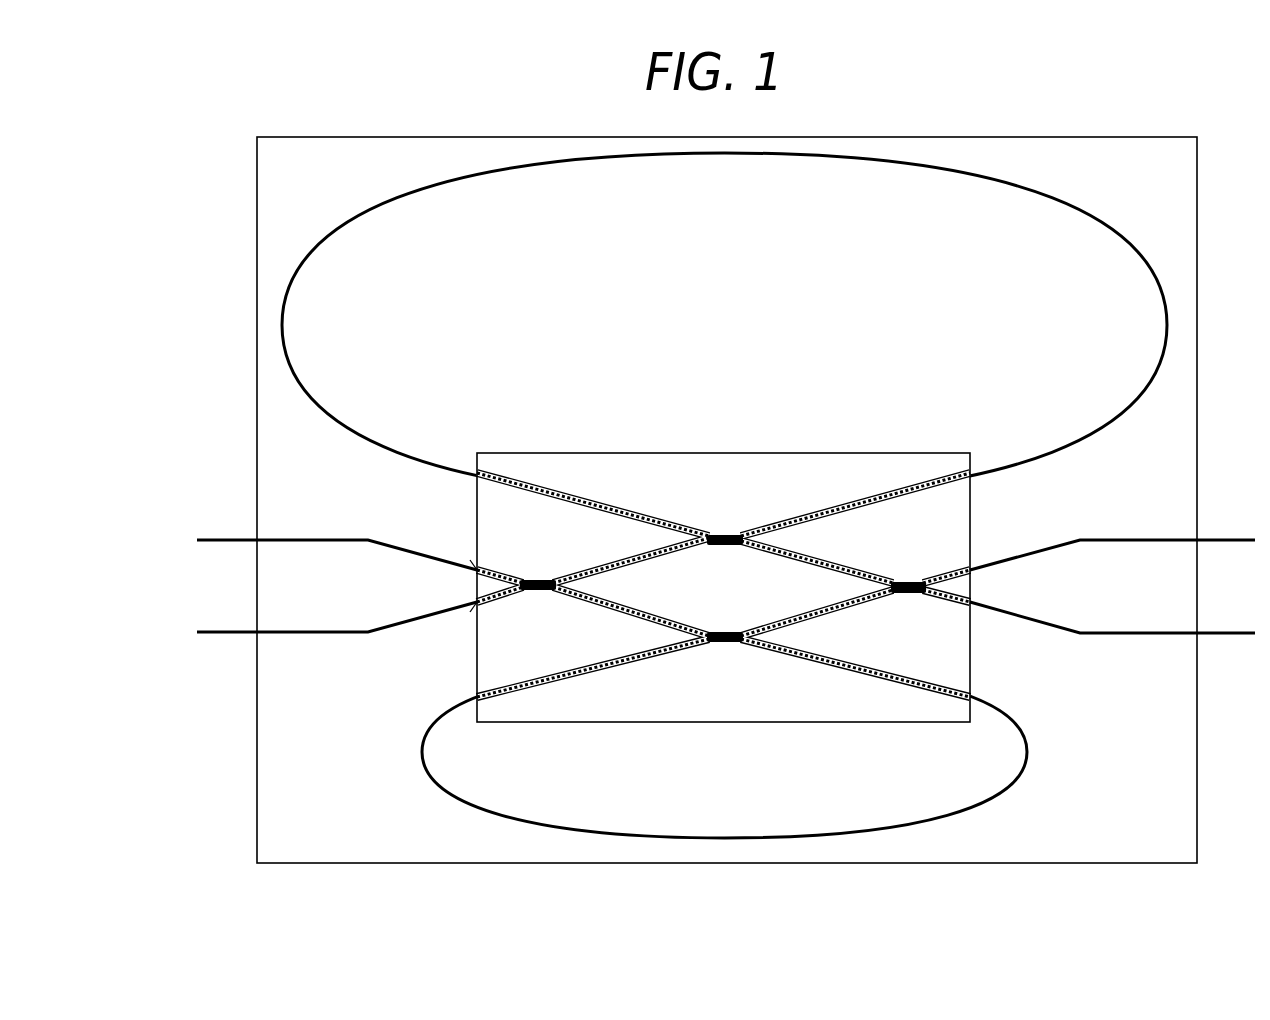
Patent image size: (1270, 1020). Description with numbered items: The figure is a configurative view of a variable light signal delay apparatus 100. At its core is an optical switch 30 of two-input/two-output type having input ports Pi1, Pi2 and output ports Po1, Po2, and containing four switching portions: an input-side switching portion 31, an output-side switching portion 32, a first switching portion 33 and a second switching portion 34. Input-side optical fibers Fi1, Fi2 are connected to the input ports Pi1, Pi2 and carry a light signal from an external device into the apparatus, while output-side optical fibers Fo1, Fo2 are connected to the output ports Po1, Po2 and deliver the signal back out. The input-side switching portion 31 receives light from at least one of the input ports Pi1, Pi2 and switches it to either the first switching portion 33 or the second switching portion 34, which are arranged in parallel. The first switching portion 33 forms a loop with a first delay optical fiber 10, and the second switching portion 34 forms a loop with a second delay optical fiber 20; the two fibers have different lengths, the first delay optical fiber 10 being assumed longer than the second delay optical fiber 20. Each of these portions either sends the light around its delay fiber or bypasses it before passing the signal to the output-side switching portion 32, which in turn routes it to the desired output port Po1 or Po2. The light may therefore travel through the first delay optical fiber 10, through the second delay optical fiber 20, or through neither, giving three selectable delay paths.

The variable light signal delay apparatus 100 is at (257, 181).
The first delay optical fiber 10 is at (716, 156).
The second delay optical fiber 20 is at (619, 836).
The optical switch 30 is at (500, 453).
The input-side switching portion 31 is at (536, 580).
The output-side switching portion 32 is at (906, 582).
The first switching portion 33 is at (718, 535).
The second switching portion 34 is at (728, 644).
The input-side optical fiber Fi1 is at (208, 539).
The input-side optical fiber Fi2 is at (213, 634).
The input port Pi1 is at (476, 568).
The input port Pi2 is at (476, 605).
The output port Po1 is at (972, 568).
The output port Po2 is at (972, 604).
The output-side optical fiber Fo1 is at (1233, 539).
The output-side optical fiber Fo2 is at (1232, 636).